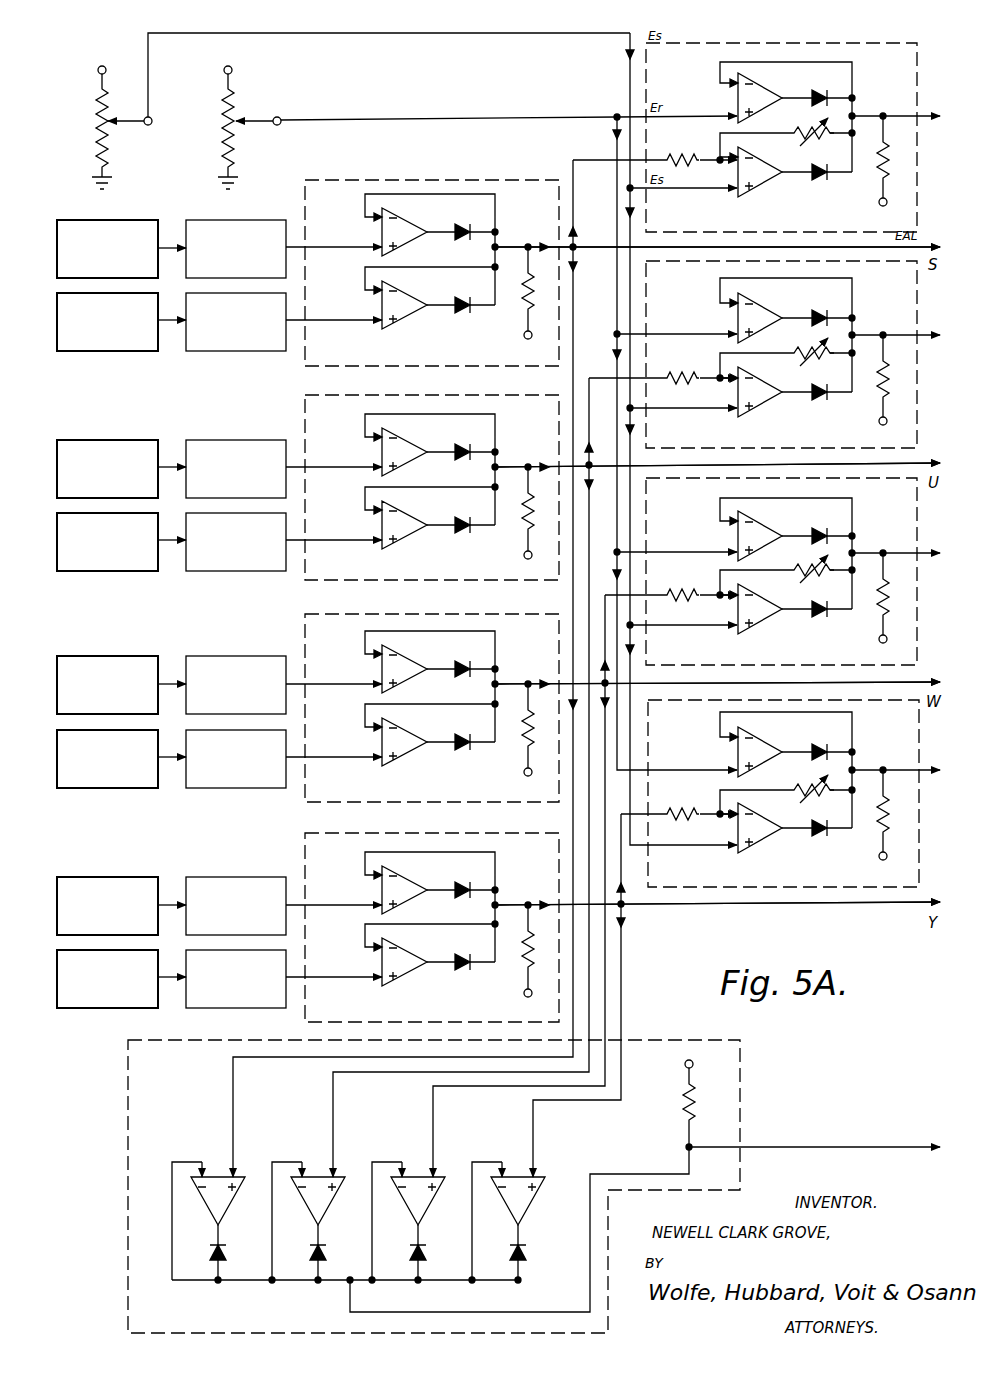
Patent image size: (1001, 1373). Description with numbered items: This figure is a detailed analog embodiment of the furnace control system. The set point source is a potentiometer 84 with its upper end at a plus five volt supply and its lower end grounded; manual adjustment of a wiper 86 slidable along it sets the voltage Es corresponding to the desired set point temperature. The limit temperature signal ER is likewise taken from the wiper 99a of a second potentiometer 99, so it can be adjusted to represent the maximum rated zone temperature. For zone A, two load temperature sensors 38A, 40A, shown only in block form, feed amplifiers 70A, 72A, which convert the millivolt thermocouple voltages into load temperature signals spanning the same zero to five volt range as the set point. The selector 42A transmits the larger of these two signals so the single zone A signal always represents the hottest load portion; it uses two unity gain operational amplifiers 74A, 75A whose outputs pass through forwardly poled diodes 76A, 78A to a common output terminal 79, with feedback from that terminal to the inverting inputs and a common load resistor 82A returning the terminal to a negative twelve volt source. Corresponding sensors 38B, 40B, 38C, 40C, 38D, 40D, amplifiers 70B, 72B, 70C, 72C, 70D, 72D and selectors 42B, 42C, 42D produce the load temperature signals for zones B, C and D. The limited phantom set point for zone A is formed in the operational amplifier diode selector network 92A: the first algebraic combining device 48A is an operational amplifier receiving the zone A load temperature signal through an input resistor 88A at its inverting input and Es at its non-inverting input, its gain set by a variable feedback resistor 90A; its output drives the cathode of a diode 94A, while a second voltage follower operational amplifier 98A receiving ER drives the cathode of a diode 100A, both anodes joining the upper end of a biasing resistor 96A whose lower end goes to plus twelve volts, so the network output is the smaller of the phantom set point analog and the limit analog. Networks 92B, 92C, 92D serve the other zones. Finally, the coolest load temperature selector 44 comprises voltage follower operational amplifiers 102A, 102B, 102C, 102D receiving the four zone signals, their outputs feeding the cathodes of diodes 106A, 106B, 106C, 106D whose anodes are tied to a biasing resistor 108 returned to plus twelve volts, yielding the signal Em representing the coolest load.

The potentiometer 84 is at (118, 84).
The wiper 86 is at (150, 125).
The potentiometer 99 is at (236, 92).
The wiper 99a is at (277, 125).
The load temperature sensor 38A is at (118, 220).
The load temperature sensor 40A is at (105, 351).
The amplifier 70A is at (244, 220).
The amplifier 72A is at (225, 351).
The selector 42A is at (613, 254).
The operational amplifier 74A is at (380, 236).
The operational amplifier 75A is at (380, 304).
The diode 76A is at (466, 224).
The diode 78A is at (466, 297).
The common output terminal 79 is at (514, 238).
The resistor 82A is at (523, 317).
The zone B load temperature sensor 1 38B is at (132, 440).
The zone B load temperature sensor 2 40B is at (105, 571).
The amplifier 70B is at (260, 440).
The amplifier 72B is at (225, 571).
The zone B selector circuit 42B is at (370, 408).
The zone C load temperature sensor 1 38C is at (132, 656).
The zone C load temperature sensor 2 40C is at (105, 788).
The amplifier 70C is at (260, 656).
The amplifier 72C is at (225, 788).
The zone C selector circuit 42C is at (370, 627).
The zone D load temperature sensor 1 38D is at (132, 877).
The zone D load temperature sensor 2 40D is at (130, 1008).
The amplifier 70D is at (260, 877).
The amplifier 72D is at (262, 1008).
The zone D selector circuit 42D is at (366, 846).
The operational amplifier diode selector network 92A is at (751, 137).
The second operational amplifier 98A is at (736, 96).
The first algebraic combining device 48A is at (736, 200).
The diode 100A is at (821, 90).
The diode 94A is at (812, 182).
The variable feedback resistor 90A is at (806, 126).
The input resistor 88A is at (692, 152).
The biasing resistor 96A is at (880, 186).
The zone B comparator circuit 92B is at (700, 296).
The zone C comparator circuit 92C is at (698, 514).
The zone D comparator circuit 92D is at (698, 734).
The coolest load temperature selector 44 is at (534, 1186).
The biasing resistor 108 is at (684, 1124).
The operational amplifier 102A is at (218, 1162).
The operational amplifier 102B is at (318, 1162).
The operational amplifier 102C is at (418, 1162).
The operational amplifier 102D is at (518, 1162).
The diode 106A is at (210, 1272).
The diode 106B is at (310, 1272).
The diode 106C is at (422, 1264).
The diode 106D is at (522, 1260).